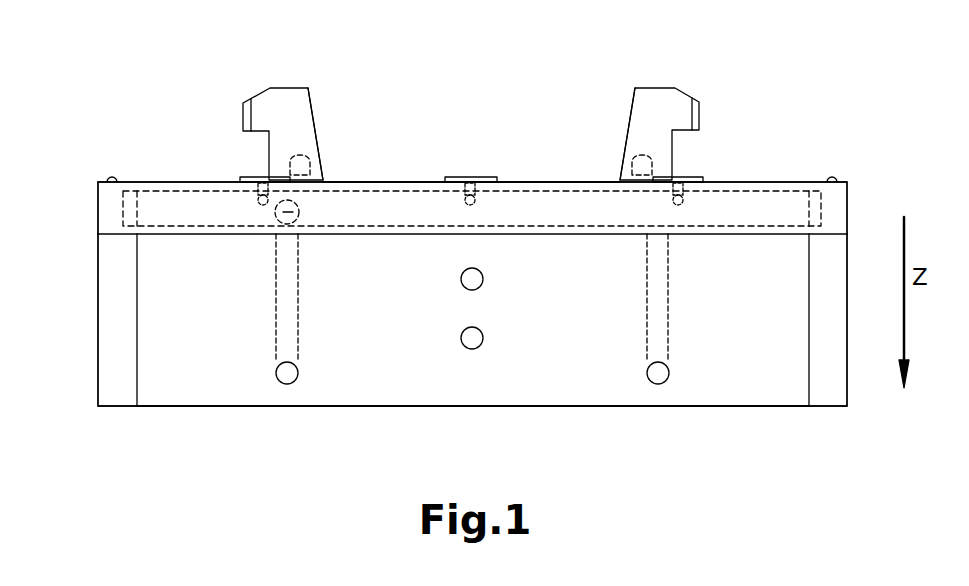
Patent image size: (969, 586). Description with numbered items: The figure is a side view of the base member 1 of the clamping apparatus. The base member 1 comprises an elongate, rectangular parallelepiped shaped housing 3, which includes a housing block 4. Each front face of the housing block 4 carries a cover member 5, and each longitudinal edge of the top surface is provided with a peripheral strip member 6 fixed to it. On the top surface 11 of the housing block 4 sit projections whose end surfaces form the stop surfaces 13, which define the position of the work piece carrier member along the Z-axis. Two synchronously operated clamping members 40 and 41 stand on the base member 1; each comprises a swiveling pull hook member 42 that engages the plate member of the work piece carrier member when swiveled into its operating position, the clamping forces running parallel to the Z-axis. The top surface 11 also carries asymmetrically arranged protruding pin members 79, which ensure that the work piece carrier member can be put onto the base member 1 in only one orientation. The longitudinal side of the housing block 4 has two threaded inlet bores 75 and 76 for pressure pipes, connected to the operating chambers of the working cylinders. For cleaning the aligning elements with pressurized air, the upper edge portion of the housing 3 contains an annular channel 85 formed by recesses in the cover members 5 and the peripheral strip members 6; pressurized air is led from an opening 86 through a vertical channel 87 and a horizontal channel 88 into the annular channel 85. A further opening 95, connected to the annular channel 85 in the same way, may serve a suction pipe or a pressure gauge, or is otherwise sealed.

The base member 1 is at (79, 164).
The housing 3 is at (84, 276).
The housing block 4 is at (373, 380).
The cover member 5 is at (113, 345).
The peripheral strip member 6 is at (110, 207).
The top surface 11 is at (527, 181).
The stop surfaces 13 is at (247, 180).
The clamping member 40 is at (288, 66).
The clamping member 41 is at (661, 68).
The pull hook member 42 is at (288, 115).
The threaded inlet bore 75 is at (472, 279).
The threaded inlet bore 76 is at (472, 338).
The pin member 79 is at (305, 157).
The annular channel 85 is at (207, 208).
The opening 86 is at (287, 373).
The vertical channel 87 is at (285, 315).
The horizontal channel 88 is at (300, 214).
The opening 95 is at (658, 373).